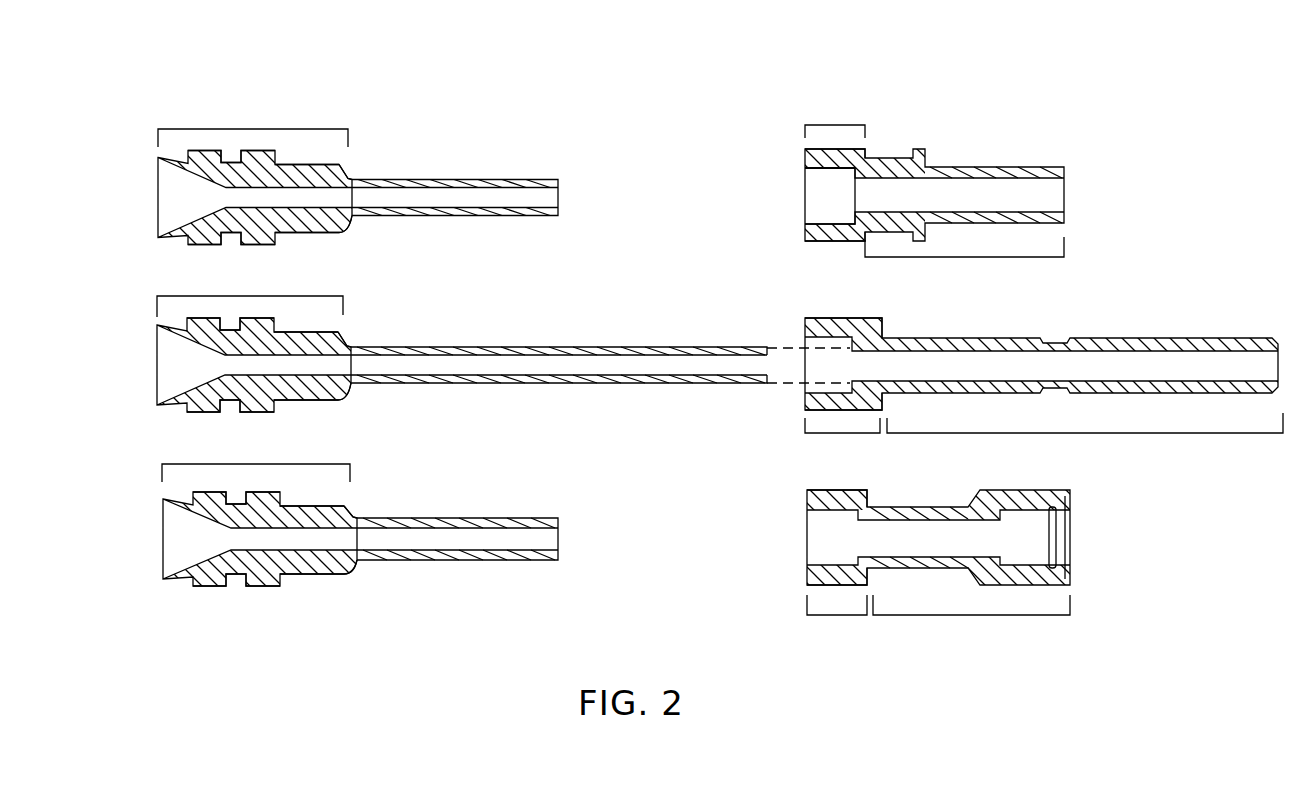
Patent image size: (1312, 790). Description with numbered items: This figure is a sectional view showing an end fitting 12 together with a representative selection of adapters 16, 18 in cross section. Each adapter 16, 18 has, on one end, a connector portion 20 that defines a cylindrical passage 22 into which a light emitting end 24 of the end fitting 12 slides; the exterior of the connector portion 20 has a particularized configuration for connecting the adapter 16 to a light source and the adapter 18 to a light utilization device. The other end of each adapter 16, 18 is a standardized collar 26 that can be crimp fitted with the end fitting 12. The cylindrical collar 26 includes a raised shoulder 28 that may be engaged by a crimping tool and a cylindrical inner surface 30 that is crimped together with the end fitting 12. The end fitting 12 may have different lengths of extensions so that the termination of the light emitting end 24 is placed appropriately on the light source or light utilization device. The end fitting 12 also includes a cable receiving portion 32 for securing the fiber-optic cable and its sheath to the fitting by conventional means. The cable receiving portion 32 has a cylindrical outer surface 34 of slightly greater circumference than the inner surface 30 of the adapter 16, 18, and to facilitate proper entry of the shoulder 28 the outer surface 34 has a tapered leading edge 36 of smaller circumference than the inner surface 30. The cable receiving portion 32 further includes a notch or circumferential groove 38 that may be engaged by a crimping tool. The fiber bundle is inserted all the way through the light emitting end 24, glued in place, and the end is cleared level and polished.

The end fitting 12 is at (158, 237).
The adapter 16 is at (1068, 165).
The adapter 18 is at (1125, 334).
The connector portion 20 is at (958, 257).
The cylindrical passage 22 is at (827, 192).
The light emitting end 24 is at (433, 216).
The standardized collar 26 is at (843, 125).
The raised shoulder 28 is at (817, 242).
The cylindrical inner surface 30 is at (830, 168).
The cable receiving portion 32 is at (232, 128).
The cylindrical outer surface 34 is at (317, 231).
The tapered leading edge 36 is at (345, 216).
The circumferential groove 38 is at (235, 233).